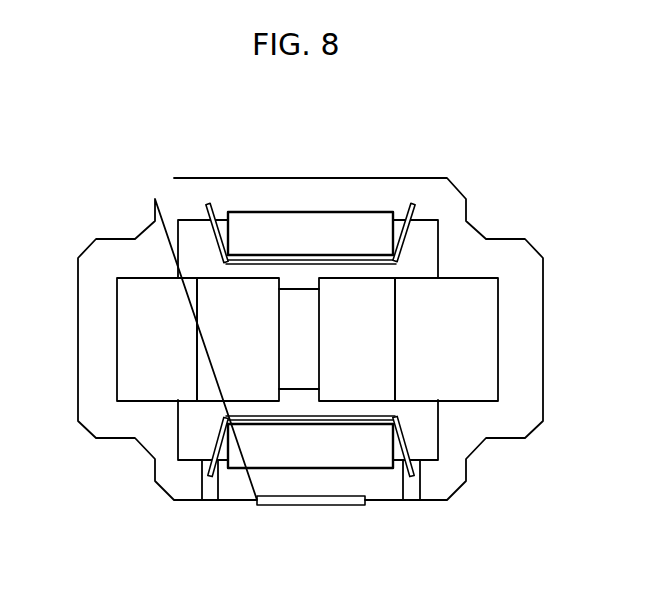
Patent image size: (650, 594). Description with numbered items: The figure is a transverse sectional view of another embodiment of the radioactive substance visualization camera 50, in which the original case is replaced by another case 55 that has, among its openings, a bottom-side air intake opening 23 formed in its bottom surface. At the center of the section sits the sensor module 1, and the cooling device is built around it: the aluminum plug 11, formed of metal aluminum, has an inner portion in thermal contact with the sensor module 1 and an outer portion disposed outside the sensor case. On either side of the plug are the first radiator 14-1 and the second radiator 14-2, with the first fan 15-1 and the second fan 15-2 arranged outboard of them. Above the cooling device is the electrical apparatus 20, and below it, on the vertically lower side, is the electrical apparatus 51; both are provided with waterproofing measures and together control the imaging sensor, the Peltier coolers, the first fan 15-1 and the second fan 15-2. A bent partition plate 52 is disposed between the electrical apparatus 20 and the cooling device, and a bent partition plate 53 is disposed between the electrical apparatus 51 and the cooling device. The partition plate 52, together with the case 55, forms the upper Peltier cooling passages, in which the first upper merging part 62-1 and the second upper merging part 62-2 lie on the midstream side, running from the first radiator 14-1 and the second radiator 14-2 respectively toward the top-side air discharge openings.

The radioactive substance visualization camera 50 is at (299, 144).
The case 55 is at (78, 372).
The sensor module 1 is at (194, 218).
The aluminum plug 11 is at (297, 387).
The first radiator 14-1 is at (383, 285).
The second radiator 14-2 is at (214, 297).
The first fan 15-1 is at (483, 295).
The second fan 15-2 is at (138, 299).
The electrical apparatus 20 is at (345, 211).
The partition plate 52 is at (397, 204).
The first upper merging part 62-1 is at (413, 201).
The second upper merging part 62-2 is at (211, 200).
The electrical apparatus 51 is at (242, 471).
The partition plate 53 is at (405, 477).
The bottom-side air intake opening 23 is at (310, 507).